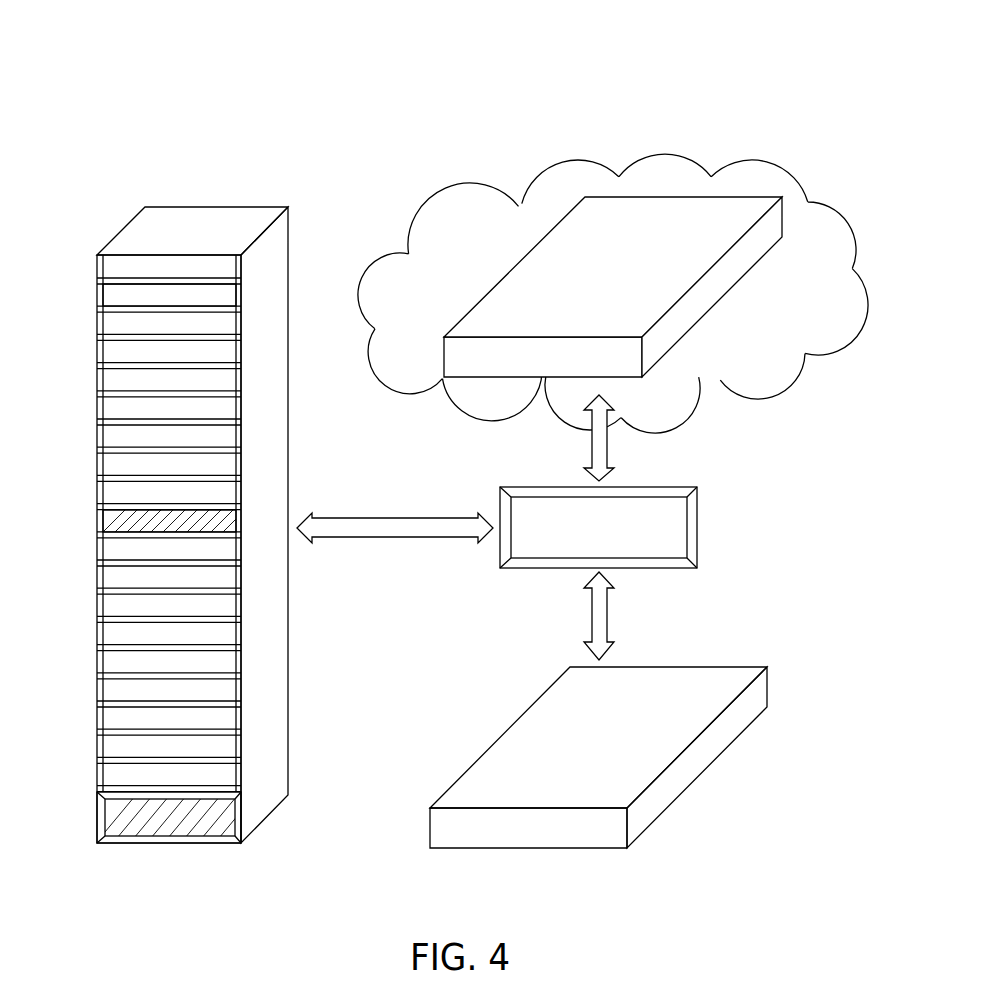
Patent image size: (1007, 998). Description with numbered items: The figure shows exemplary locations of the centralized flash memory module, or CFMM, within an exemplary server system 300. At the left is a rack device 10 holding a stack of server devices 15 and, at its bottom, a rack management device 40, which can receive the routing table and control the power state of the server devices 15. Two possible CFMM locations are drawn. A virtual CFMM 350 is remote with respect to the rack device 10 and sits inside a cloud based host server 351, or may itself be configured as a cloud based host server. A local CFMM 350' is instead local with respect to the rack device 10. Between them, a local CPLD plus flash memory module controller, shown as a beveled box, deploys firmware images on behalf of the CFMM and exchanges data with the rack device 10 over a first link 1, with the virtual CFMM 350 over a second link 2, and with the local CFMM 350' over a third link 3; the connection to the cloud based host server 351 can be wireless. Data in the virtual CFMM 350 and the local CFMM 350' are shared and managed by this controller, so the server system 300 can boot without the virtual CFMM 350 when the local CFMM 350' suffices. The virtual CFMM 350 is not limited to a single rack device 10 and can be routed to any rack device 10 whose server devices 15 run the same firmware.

The first communication link 1 is at (405, 518).
The second communication link 2 is at (607, 451).
The third communication link 3 is at (608, 617).
The rack device 10 is at (247, 205).
The server device 15 is at (108, 292).
The rack management device 40 is at (215, 827).
The server system 300 is at (786, 68).
The virtual CFMM 350 is at (613, 241).
The local CFMM 350' is at (598, 757).
The cloud based host server 351 is at (857, 240).